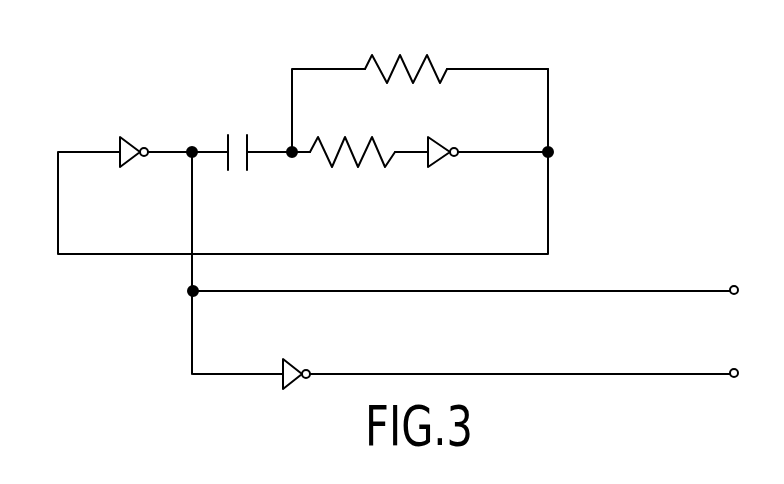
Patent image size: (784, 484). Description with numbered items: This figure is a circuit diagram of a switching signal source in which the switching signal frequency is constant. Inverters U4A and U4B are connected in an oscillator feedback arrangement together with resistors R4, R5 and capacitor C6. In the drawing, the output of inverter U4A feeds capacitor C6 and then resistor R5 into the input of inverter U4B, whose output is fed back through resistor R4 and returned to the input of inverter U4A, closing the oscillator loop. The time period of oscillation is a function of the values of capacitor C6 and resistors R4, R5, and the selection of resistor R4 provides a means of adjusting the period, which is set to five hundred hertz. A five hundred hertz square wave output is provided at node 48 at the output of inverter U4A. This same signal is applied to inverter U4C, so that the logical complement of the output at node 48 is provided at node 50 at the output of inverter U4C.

The node 48 is at (737, 286).
The node 50 is at (737, 369).
The inverter U4A is at (128, 131).
The inverter U4B is at (456, 133).
The inverter U4C is at (301, 352).
The capacitor C6 is at (239, 132).
The resistor R4 is at (406, 49).
The resistor R5 is at (352, 133).